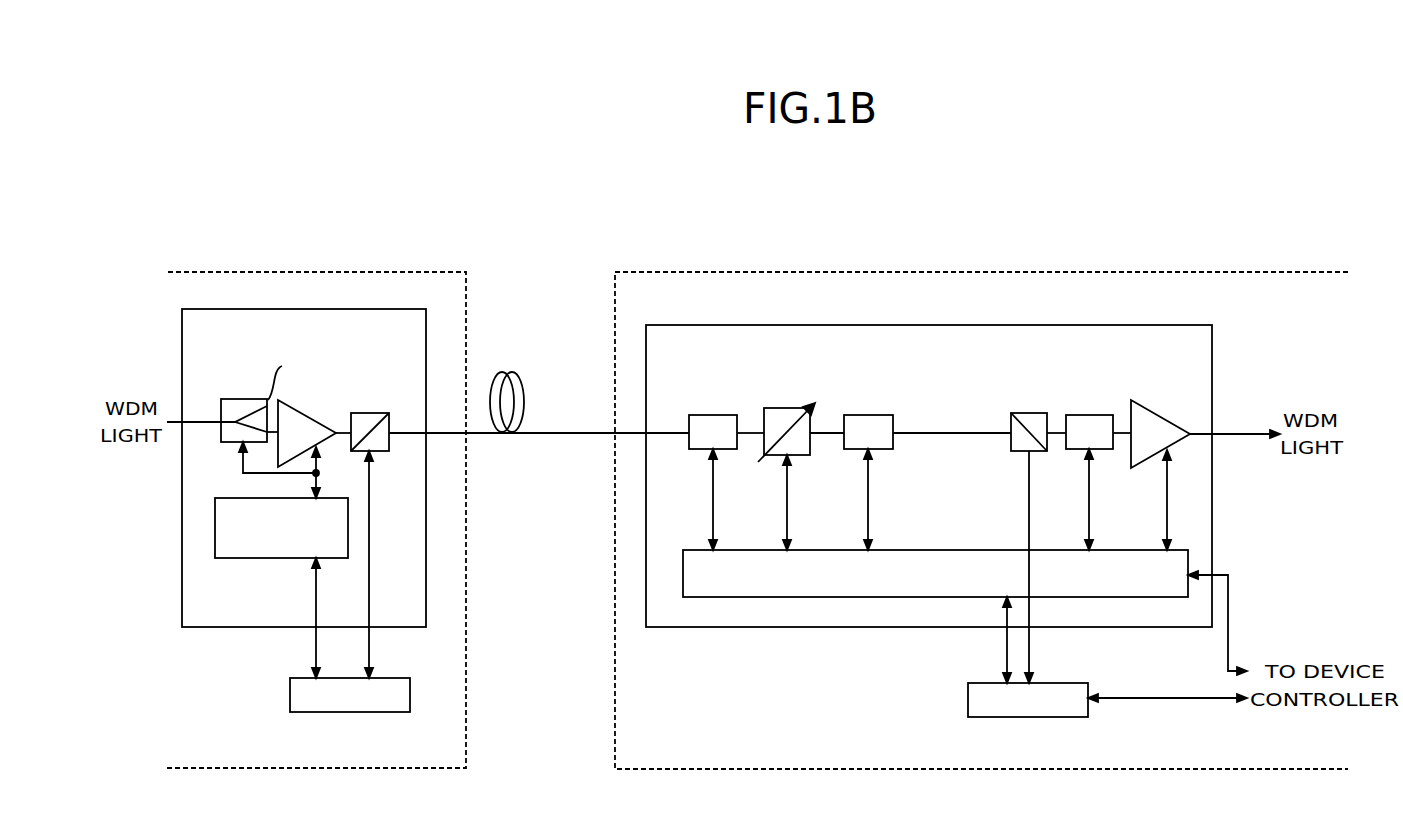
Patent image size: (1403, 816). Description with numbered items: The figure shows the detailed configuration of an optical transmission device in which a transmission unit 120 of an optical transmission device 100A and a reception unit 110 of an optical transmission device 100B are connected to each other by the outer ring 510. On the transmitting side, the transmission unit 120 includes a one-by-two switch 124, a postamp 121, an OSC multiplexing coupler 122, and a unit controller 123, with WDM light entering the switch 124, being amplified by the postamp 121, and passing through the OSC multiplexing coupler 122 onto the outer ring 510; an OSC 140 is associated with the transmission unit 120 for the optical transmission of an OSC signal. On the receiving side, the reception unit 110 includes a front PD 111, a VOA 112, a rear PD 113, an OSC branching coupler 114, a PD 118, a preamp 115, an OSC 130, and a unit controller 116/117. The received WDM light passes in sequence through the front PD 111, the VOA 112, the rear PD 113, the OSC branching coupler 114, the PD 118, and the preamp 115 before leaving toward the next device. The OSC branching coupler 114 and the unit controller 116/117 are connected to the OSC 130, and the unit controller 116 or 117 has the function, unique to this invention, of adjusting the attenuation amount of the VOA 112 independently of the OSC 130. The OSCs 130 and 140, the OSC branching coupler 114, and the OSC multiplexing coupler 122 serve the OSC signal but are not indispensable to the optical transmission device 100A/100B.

The optical transmission device 100A is at (320, 272).
The optical transmission device 100B is at (989, 272).
The transmission unit 120 is at (383, 309).
The 1×2 switch (SW) 124 is at (240, 399).
The postamp 121 is at (323, 420).
The OSC multiplexing coupler 122 is at (368, 412).
The unit controller 123 is at (238, 558).
The OSC 140 is at (387, 712).
The outer ring 510 is at (572, 432).
The reception unit 110 is at (1173, 325).
The front PD 111 is at (723, 413).
The VOA 112 is at (793, 408).
The rear PD 113 is at (877, 413).
The OSC branching coupler 114 is at (1037, 413).
The PD 118 is at (1098, 415).
The preamp 115 is at (1173, 420).
The unit controller 116 is at (935, 553).
The unit controller 117 is at (940, 550).
The OSC 130 is at (1070, 717).